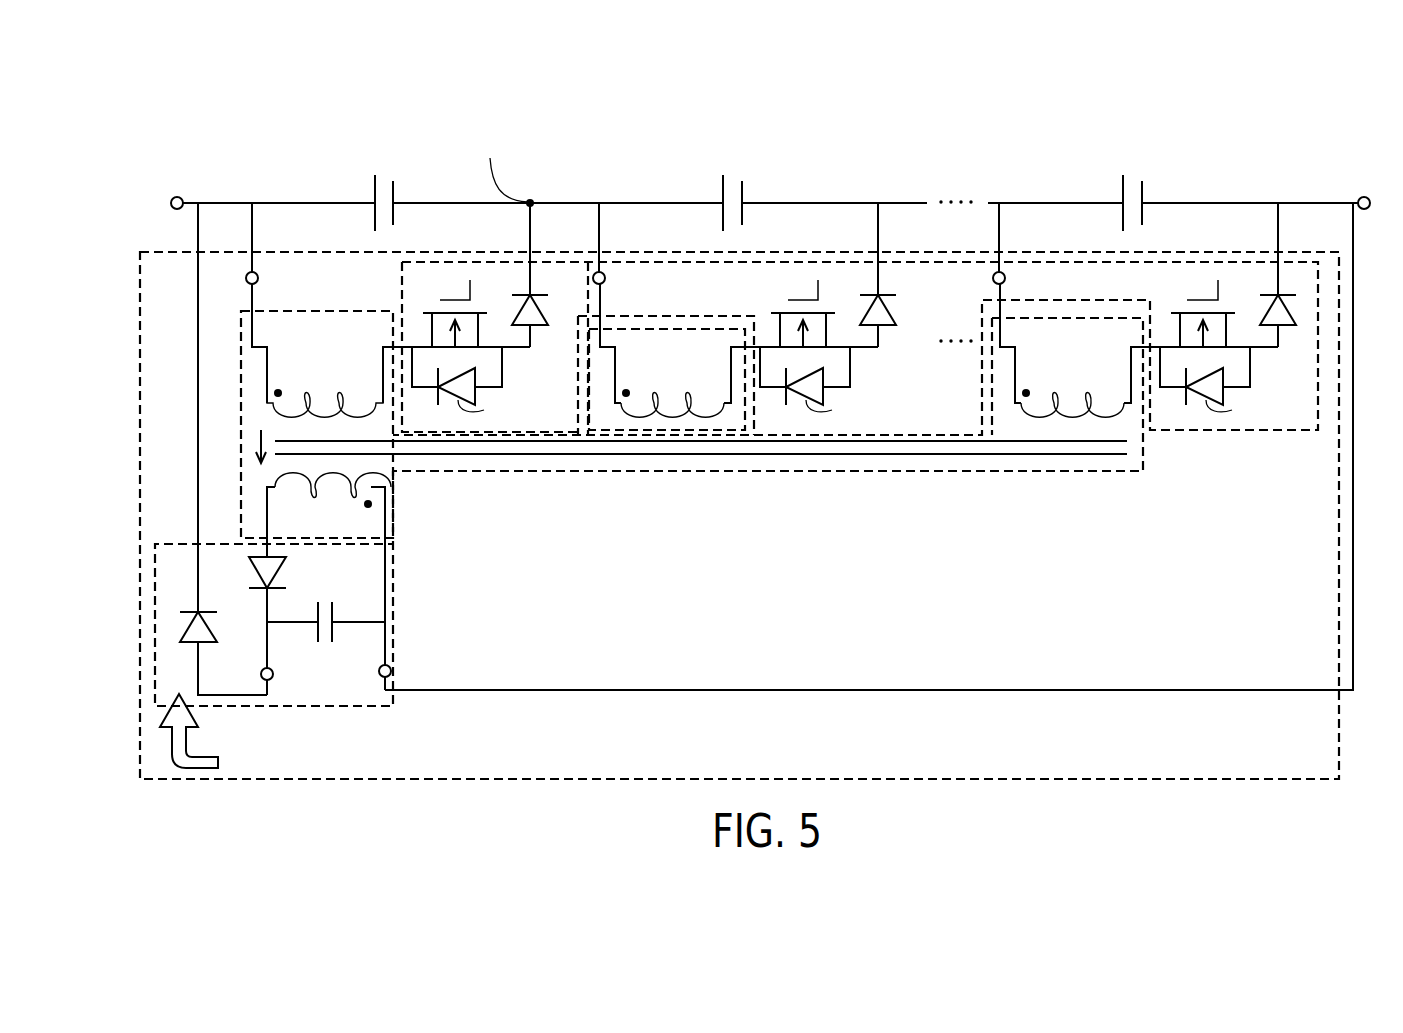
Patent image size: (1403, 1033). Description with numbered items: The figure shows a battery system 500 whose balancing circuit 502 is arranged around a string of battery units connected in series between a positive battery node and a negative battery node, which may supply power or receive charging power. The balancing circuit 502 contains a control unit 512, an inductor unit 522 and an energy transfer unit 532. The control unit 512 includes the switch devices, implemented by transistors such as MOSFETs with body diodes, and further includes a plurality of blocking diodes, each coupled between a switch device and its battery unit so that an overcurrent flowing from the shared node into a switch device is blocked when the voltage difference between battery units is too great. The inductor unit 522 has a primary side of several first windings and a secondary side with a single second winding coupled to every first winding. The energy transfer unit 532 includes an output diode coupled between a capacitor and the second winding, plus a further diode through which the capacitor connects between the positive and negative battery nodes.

The battery system 500 is at (1265, 127).
The balancing circuit 502 is at (330, 780).
The control unit 512 is at (468, 262).
The inductor unit 522 is at (397, 505).
The energy transfer unit 532 is at (397, 598).